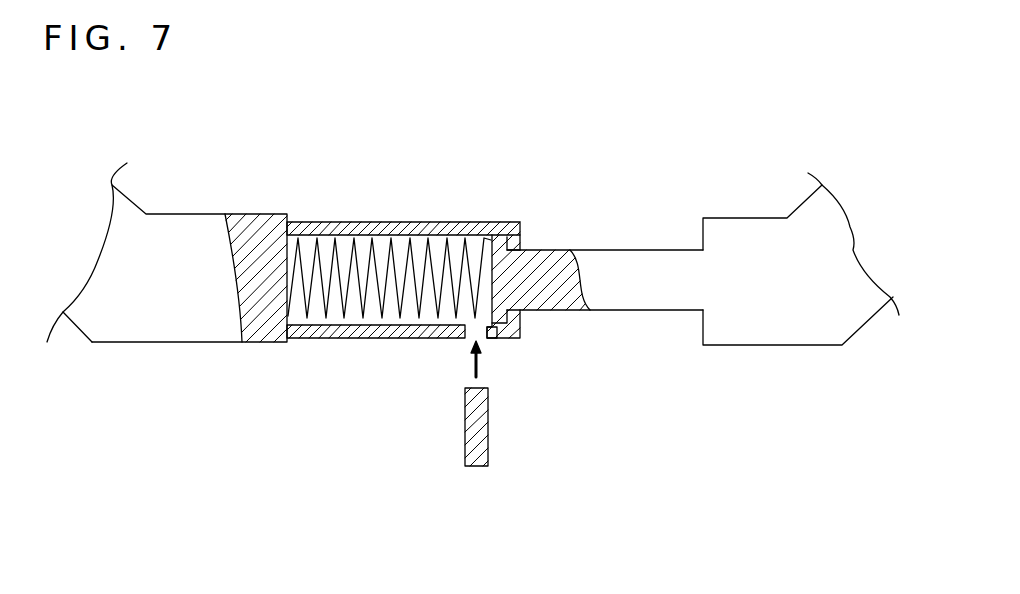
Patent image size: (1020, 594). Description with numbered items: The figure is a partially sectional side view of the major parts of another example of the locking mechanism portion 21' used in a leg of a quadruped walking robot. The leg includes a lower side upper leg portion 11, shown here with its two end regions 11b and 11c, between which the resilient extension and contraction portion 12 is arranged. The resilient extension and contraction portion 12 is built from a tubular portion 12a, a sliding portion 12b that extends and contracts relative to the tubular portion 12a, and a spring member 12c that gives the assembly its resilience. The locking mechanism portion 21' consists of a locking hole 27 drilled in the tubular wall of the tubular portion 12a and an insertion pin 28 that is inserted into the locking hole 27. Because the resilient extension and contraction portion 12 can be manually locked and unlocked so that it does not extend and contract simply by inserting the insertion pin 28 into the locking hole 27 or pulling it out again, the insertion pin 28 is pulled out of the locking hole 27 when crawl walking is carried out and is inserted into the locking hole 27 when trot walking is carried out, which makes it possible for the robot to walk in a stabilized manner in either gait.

The lower side upper leg portion 11 is at (92, 396).
The left tube portion 11b is at (161, 322).
The right tube portion 11c is at (758, 315).
The resilient extension and contraction portion 12 is at (566, 167).
The tubular portion 12a is at (313, 338).
The sliding portion 12b is at (648, 302).
The spring member 12c is at (345, 248).
The locking hole 27 is at (479, 332).
The insertion pin 28 is at (488, 448).
The locking mechanism portion 21' is at (421, 402).